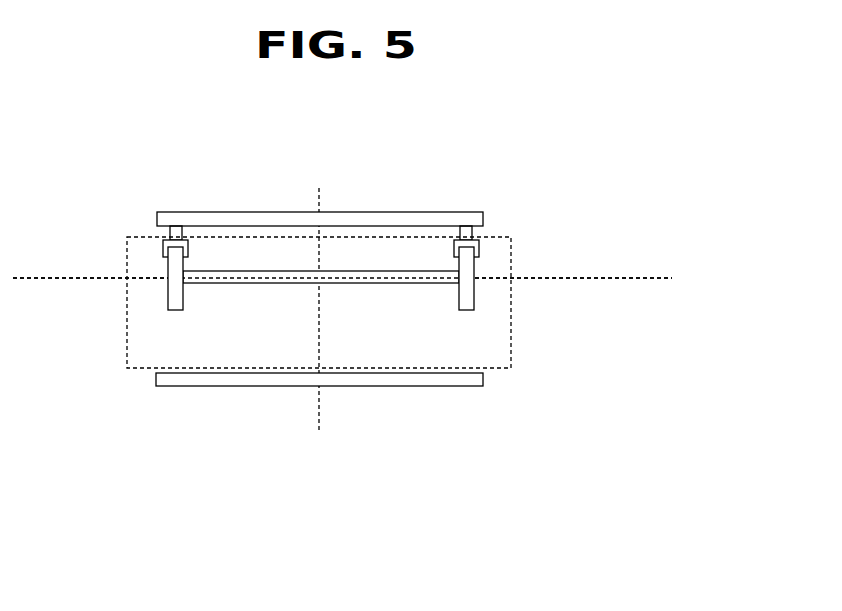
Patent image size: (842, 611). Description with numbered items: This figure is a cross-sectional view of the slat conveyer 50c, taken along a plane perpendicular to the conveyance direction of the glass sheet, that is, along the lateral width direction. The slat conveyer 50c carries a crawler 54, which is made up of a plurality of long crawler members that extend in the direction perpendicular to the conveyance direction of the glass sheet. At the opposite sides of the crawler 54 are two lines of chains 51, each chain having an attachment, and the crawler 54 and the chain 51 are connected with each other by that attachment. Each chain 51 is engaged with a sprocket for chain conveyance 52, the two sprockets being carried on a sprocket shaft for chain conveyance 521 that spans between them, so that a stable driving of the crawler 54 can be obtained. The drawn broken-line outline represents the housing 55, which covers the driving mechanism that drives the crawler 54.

The slat conveyer 50c is at (460, 163).
The chain having attachment 51 is at (170, 236).
The sprocket for chain conveyance 52 is at (184, 298).
The sprocket shaft for chain conveyance 521 is at (347, 284).
The crawler 54 is at (388, 211).
The housing 55 is at (127, 330).